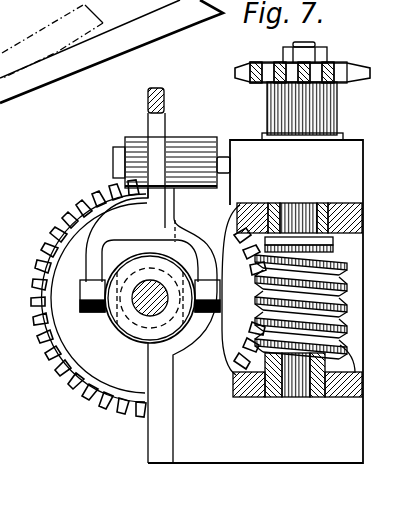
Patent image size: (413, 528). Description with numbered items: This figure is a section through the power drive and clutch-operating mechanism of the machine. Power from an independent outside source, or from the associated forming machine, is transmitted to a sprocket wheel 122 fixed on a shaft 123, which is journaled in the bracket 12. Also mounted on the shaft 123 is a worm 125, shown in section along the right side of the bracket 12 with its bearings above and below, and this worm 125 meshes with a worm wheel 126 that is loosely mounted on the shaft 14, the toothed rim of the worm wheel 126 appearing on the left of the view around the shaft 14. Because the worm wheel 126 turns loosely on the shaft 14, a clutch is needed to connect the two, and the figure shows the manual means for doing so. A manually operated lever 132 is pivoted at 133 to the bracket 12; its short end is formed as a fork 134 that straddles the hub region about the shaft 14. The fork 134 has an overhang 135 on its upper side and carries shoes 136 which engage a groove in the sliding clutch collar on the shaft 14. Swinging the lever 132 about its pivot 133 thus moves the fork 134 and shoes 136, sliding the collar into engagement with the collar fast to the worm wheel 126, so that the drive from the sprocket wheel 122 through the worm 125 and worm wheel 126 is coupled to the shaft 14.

The bracket 12 is at (205, 462).
The shaft 14 is at (143, 312).
The sprocket wheel 122 is at (258, 63).
The shaft 123 is at (300, 203).
The worm 125 is at (347, 400).
The worm wheel 126 is at (67, 383).
The manually operated lever 132 is at (10, 99).
The pivot 133 is at (118, 155).
The fork 134 is at (103, 230).
The overhang 135 is at (80, 290).
The shoes 136 is at (112, 318).